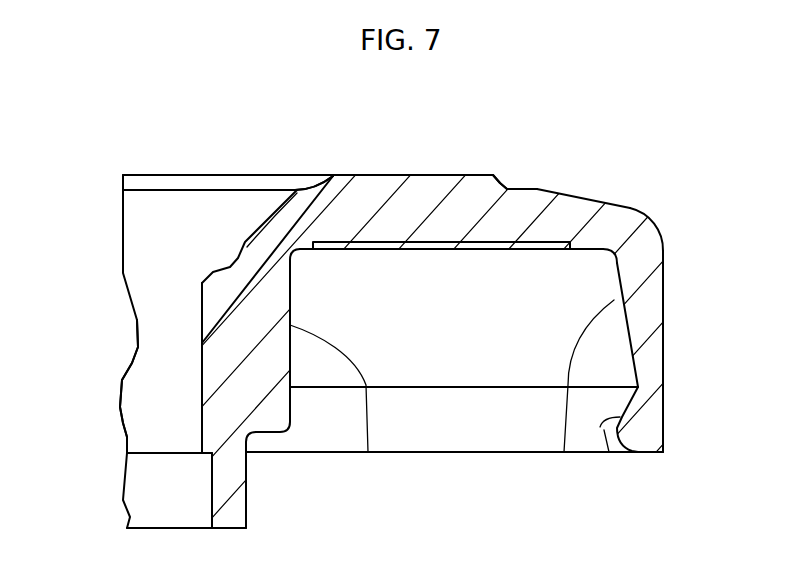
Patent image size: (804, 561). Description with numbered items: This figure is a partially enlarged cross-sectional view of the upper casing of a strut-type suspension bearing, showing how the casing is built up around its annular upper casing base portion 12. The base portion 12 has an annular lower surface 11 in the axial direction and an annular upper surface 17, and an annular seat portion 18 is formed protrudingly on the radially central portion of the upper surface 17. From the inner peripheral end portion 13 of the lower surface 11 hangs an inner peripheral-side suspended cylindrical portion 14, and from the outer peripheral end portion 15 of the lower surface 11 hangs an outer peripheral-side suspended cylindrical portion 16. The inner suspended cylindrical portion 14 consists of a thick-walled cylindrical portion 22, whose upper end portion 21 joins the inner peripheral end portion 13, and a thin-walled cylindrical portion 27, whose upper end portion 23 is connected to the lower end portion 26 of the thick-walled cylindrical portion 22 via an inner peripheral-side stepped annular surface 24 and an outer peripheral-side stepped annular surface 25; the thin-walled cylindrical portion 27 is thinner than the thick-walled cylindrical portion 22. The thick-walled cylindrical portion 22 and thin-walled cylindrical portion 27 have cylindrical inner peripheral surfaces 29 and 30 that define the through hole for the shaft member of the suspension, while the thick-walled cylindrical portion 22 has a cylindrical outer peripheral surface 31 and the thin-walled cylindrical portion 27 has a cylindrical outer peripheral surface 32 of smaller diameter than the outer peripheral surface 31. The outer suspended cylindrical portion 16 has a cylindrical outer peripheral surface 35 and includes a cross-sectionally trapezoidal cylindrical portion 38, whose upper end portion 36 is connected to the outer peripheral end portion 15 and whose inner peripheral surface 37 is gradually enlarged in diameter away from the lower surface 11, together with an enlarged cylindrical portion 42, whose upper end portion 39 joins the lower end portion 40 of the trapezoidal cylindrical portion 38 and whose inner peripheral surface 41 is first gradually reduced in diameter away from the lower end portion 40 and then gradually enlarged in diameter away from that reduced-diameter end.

The annular lower surface 11 is at (395, 253).
The upper casing base portion 12 is at (448, 205).
The inner peripheral end portion 13 is at (273, 227).
The inner peripheral-side suspended cylindrical portion 14 is at (202, 397).
The outer peripheral end portion 15 is at (628, 222).
The outer peripheral-side suspended cylindrical portion 16 is at (664, 343).
The annular upper surface 17 is at (527, 190).
The annular seat portion 18 is at (397, 184).
The upper end portion 21 is at (242, 290).
The thick-walled cylindrical portion 22 is at (243, 325).
The upper end portion 23 is at (226, 452).
The inner peripheral-side stepped annular surface 24 is at (207, 458).
The outer peripheral-side stepped annular surface 25 is at (268, 435).
The lower end portion 26 is at (202, 428).
The thin-walled cylindrical portion 27 is at (232, 510).
The cylindrical inner peripheral surface 29 is at (202, 368).
The cylindrical inner peripheral surface 30 is at (203, 515).
The cylindrical outer peripheral surface 31 is at (336, 403).
The cylindrical outer peripheral surface 32 is at (247, 480).
The cylindrical outer peripheral surface 35 is at (665, 283).
The upper end portion 36 is at (645, 250).
The inner peripheral surface 37 is at (580, 391).
The cross-sectionally trapezoidal cylindrical portion 38 is at (650, 315).
The upper end portion 39 is at (647, 390).
The lower end portion 40 is at (648, 378).
The inner peripheral surface 41 is at (612, 449).
The enlarged cylindrical portion 42 is at (642, 435).